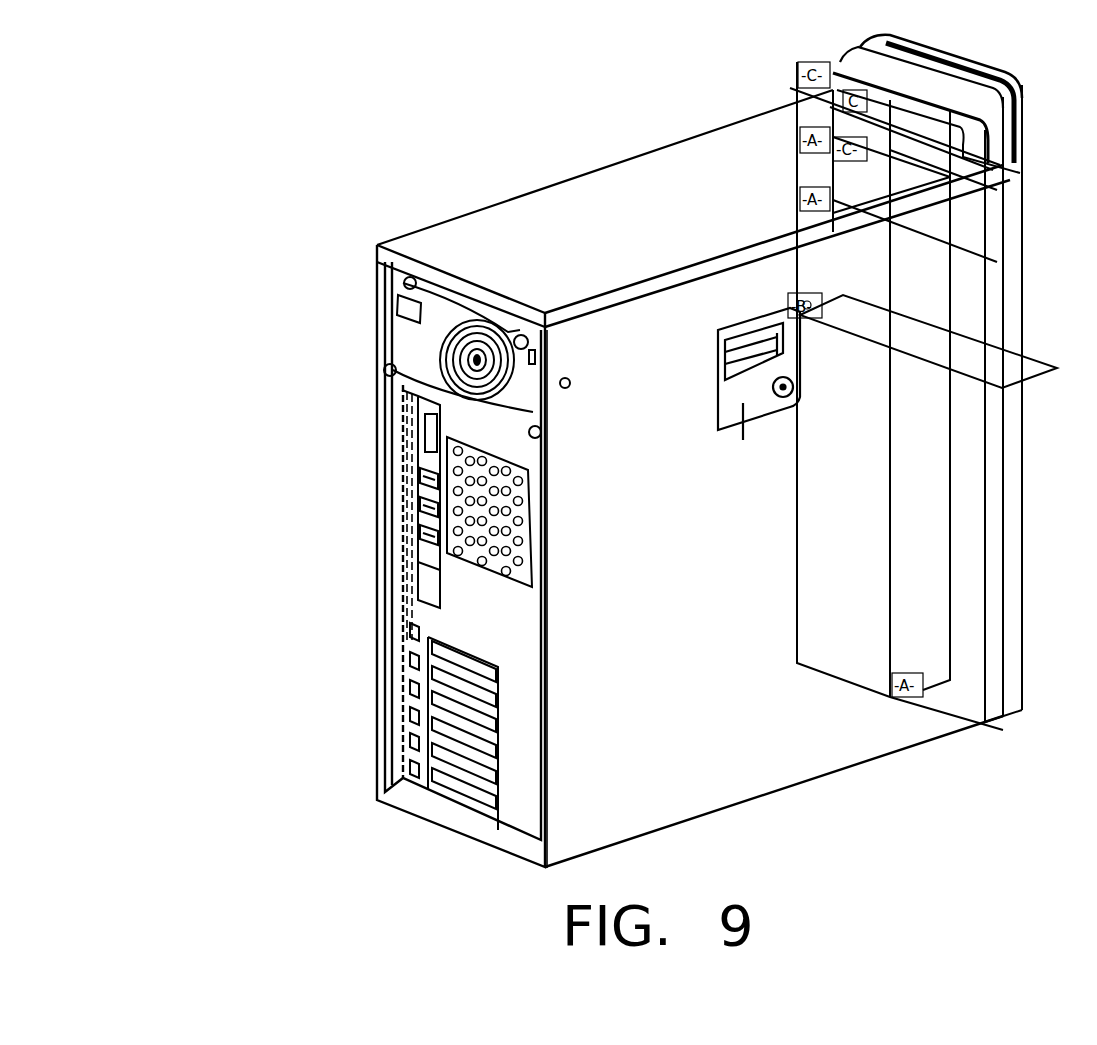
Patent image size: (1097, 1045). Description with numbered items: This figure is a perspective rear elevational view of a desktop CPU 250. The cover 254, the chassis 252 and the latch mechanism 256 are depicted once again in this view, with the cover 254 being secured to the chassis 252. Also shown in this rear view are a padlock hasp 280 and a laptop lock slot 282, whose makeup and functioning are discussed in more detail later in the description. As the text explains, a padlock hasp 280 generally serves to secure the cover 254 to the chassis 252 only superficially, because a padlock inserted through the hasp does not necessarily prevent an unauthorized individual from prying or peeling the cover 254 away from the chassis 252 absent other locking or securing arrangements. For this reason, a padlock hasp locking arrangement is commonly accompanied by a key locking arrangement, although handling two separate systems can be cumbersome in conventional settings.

The desktop CPU 250 is at (358, 666).
The chassis 252 is at (723, 142).
The cover 254 is at (711, 782).
The latch mechanism 256 is at (743, 403).
The padlock hasp 280 is at (405, 418).
The laptop lock slot 282 is at (397, 362).